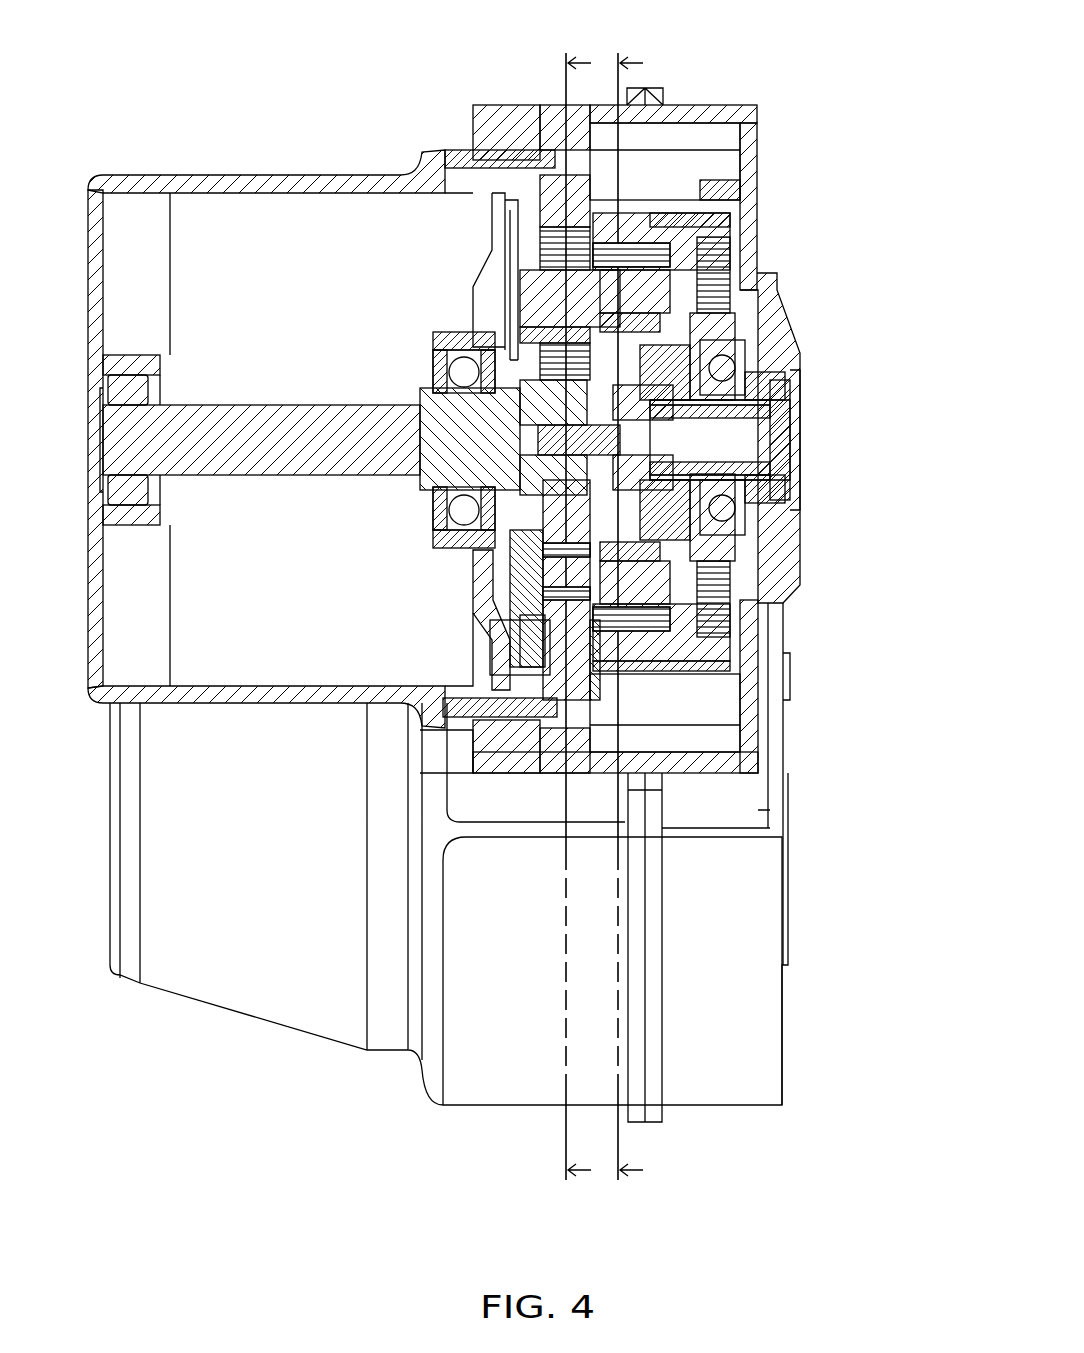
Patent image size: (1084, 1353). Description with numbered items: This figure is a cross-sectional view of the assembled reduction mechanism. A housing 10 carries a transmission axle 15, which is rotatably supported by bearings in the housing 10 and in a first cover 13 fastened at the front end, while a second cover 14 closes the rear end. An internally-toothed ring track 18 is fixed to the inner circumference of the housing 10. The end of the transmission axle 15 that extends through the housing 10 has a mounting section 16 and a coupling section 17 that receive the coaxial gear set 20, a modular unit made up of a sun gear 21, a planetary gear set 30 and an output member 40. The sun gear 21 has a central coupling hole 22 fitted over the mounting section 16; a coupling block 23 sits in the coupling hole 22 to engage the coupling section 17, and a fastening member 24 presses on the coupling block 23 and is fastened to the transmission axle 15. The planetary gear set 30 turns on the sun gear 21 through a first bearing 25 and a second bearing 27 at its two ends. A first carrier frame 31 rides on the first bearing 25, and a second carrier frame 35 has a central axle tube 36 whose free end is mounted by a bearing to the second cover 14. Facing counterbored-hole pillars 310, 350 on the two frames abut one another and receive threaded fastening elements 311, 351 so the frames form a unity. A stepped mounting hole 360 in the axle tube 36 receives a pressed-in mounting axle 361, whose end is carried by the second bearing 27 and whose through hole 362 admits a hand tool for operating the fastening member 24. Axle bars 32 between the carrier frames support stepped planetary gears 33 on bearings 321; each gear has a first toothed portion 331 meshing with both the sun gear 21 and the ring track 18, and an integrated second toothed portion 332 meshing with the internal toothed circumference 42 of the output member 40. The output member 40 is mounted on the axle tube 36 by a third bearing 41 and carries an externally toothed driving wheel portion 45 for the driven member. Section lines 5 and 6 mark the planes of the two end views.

The section line 5 is at (574, 628).
The section line 6 is at (626, 628).
The housing 10 is at (507, 105).
The first cover 13 is at (212, 178).
The second cover 14 is at (755, 140).
The transmission axle 15 is at (262, 415).
The mounting section 16 is at (462, 372).
The coupling section 17 is at (495, 360).
The internally-toothed ring track 18 is at (500, 150).
The coaxial gear set 20 is at (660, 185).
The sun gear 21 is at (736, 330).
The coupling hole 22 is at (716, 352).
The coupling block 23 is at (540, 535).
The fastening member 24 is at (770, 520).
The first bearing 25 is at (462, 510).
The second bearing 27 is at (766, 383).
The planetary gear set 30 is at (530, 645).
The first carrier frame 31 is at (530, 530).
The axle bars 32 is at (690, 600).
The stepped planetary gears 33 is at (548, 624).
The second carrier frame 35 is at (700, 580).
The axle tube 36 is at (760, 487).
The output member 40 is at (636, 215).
The third bearing 41 is at (722, 365).
The internal toothed circumference 42 is at (688, 250).
The driving wheel portion 45 is at (748, 150).
The counterbored-hole pillars 310 is at (520, 305).
The threaded fastening elements 311 is at (556, 270).
The bearing 321 is at (600, 622).
The first toothed portion 331 is at (578, 690).
The second toothed portion 332 is at (580, 665).
The counterbored-hole pillars 350 is at (722, 248).
The threaded fastening elements 351 is at (736, 300).
The stepped mounting hole 360 is at (768, 463).
The mounting axle 361 is at (762, 418).
The through hole 362 is at (772, 440).